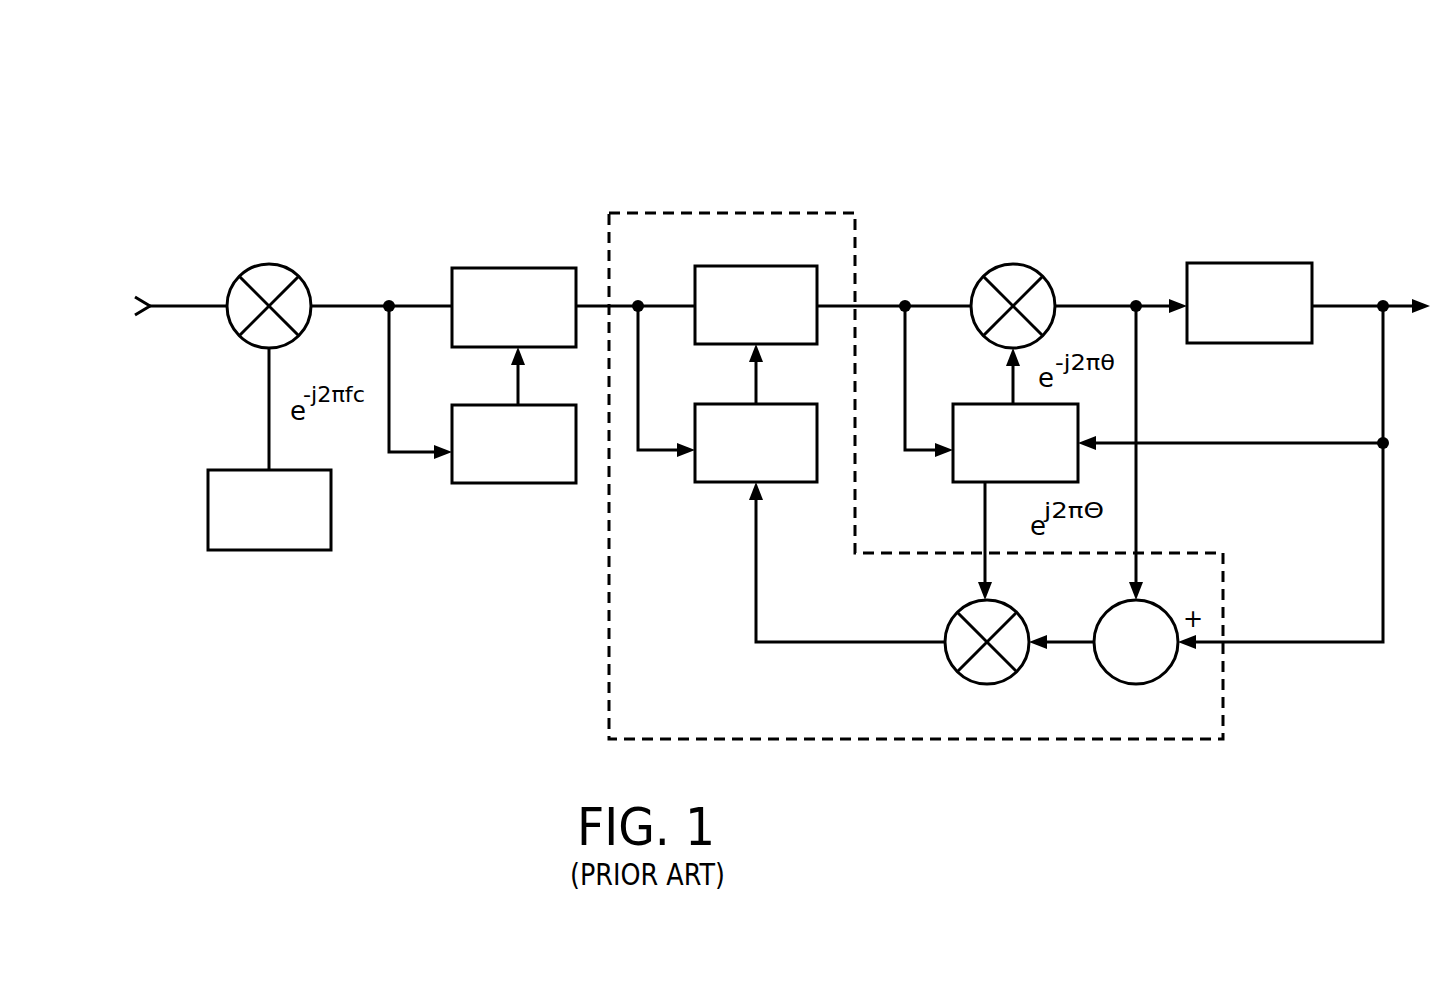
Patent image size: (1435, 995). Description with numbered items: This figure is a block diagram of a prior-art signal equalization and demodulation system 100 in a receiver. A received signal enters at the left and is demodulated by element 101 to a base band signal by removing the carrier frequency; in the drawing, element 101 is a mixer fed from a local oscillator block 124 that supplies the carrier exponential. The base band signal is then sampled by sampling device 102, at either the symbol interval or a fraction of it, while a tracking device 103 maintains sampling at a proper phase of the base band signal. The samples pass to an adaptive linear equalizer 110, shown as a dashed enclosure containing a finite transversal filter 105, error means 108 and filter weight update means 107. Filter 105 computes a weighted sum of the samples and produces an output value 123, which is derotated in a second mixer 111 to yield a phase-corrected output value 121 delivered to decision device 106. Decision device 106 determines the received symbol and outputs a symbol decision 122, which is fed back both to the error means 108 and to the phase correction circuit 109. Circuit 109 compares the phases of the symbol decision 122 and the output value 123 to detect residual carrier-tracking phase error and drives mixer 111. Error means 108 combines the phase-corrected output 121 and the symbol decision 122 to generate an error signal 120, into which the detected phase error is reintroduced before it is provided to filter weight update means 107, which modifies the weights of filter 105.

The signal equalization and demodulation system 100 is at (582, 118).
The demodulating element 101 is at (270, 264).
The sampling device 102 is at (535, 324).
The tracking device 103 is at (535, 460).
The finite transversal filter 105 is at (777, 322).
The decision device 106 is at (1270, 320).
The filter weight update means 107 is at (777, 460).
The error means 108 is at (1136, 684).
The phase correction device 109 is at (1036, 460).
The adaptive linear equalizer 110 is at (780, 212).
The derotator mixer 111 is at (972, 320).
The error signal 120 is at (1062, 648).
The phase-corrected output value 121 is at (1088, 302).
The symbol decision 122 is at (1297, 644).
The output value of transversal filter 123 is at (839, 303).
The local oscillator 124 is at (291, 528).